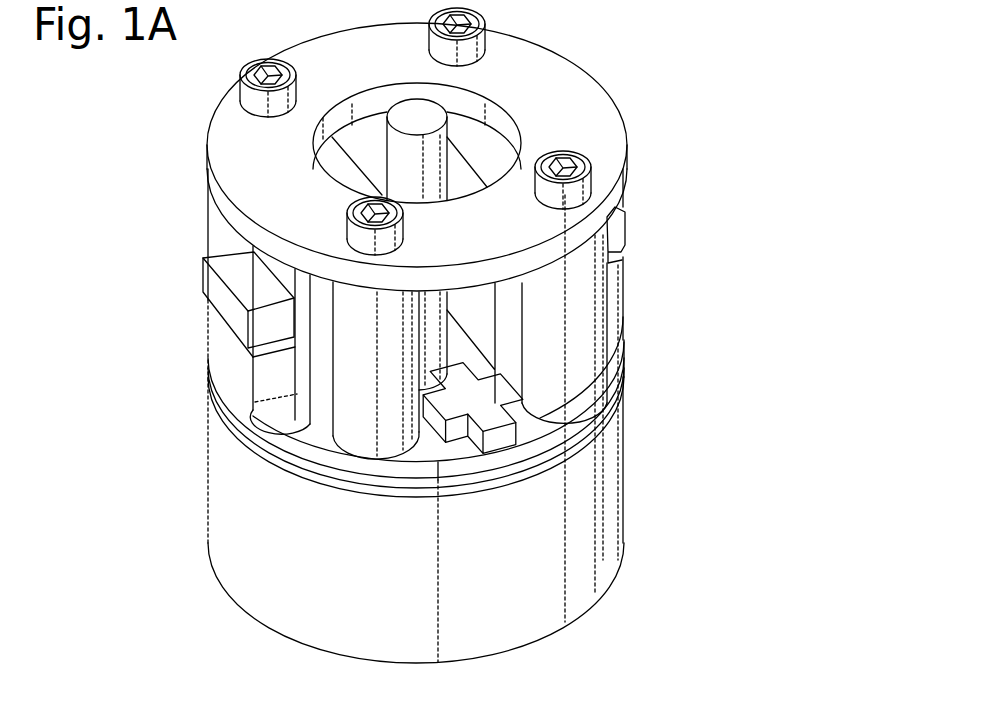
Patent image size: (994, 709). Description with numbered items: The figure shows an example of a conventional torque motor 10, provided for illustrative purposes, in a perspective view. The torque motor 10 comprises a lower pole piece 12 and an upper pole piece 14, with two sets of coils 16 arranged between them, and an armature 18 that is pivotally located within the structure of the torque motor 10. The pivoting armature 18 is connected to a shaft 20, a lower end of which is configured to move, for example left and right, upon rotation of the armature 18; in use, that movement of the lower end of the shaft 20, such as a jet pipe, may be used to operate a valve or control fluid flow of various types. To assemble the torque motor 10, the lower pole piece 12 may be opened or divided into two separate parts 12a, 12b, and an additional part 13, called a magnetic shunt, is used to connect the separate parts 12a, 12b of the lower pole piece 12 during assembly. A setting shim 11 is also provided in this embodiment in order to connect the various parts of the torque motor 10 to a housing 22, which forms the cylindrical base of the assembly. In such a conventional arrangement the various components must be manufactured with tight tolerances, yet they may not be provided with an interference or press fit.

The torque motor 10 is at (706, 73).
The setting shim 11 is at (552, 451).
The lower pole piece 12 is at (580, 448).
The separate part of lower pole piece 12a is at (382, 473).
The separate part of lower pole piece 12b is at (535, 455).
The magnetic shunt 13 is at (482, 422).
The upper pole piece 14 is at (583, 123).
The coils 16 is at (490, 318).
The armature 18 is at (222, 302).
The shaft 20 is at (437, 353).
The housing 22 is at (270, 537).